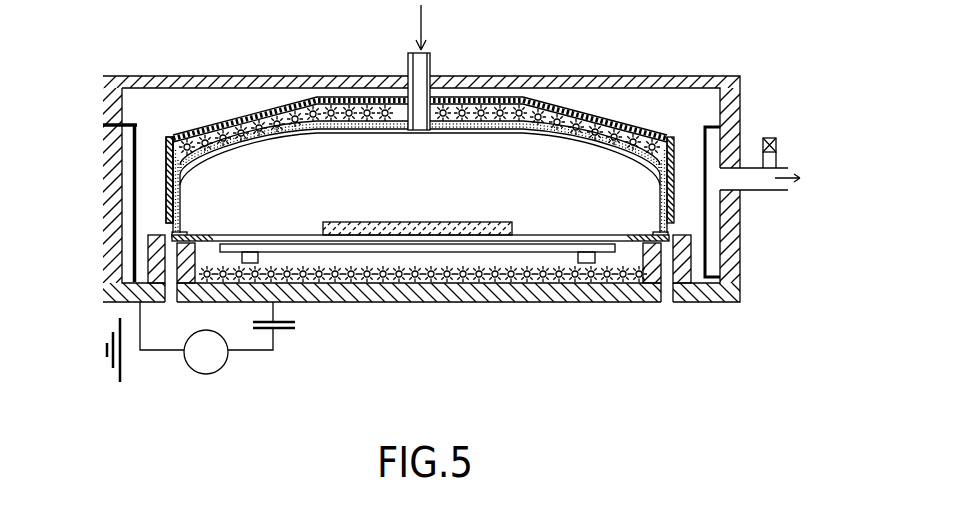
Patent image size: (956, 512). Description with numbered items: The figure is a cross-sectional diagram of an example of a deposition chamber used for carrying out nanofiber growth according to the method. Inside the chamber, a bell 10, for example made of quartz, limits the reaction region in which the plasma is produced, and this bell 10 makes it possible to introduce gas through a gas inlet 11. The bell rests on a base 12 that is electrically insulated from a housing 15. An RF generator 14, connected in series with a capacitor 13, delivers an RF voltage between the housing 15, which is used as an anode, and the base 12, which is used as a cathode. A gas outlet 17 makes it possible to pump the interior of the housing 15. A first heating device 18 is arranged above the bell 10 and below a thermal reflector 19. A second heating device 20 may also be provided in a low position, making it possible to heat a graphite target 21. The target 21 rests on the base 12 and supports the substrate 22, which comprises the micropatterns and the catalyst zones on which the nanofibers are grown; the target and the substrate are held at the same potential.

The bell 10 is at (418, 124).
The gas inlet 11 is at (431, 67).
The base 12 is at (438, 292).
The capacitor 13 is at (287, 332).
The RF generator 14 is at (208, 362).
The housing 15 is at (293, 75).
The gas outlet 17 is at (770, 192).
The first heating device 18 is at (233, 128).
The thermal reflector 19 is at (166, 135).
The second heating device 20 is at (493, 272).
The graphite target 21 is at (573, 234).
The substrate 22 is at (475, 222).